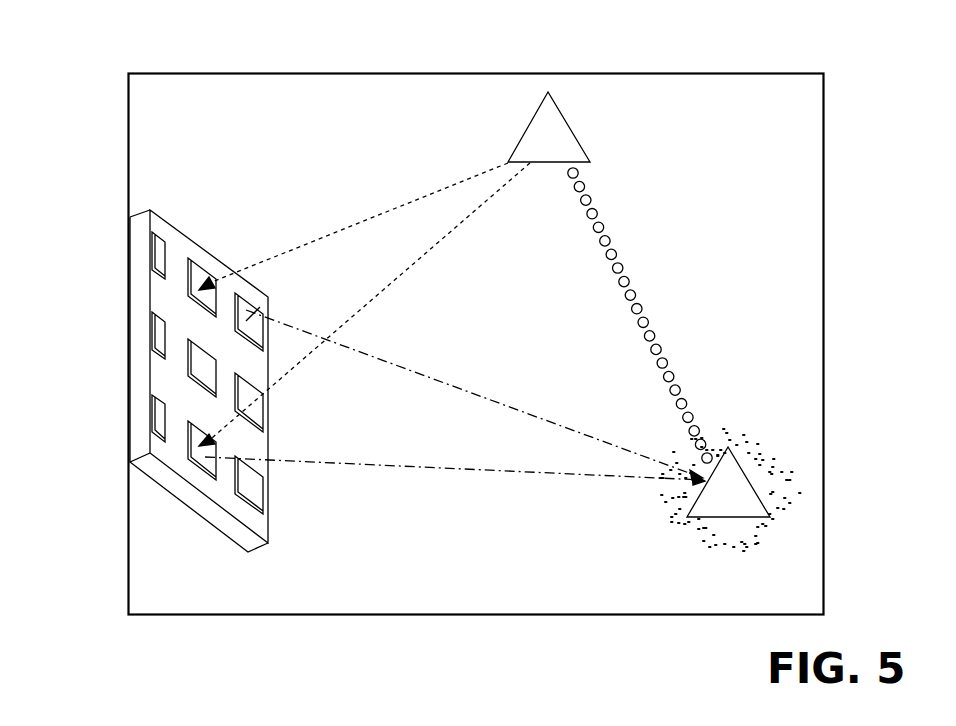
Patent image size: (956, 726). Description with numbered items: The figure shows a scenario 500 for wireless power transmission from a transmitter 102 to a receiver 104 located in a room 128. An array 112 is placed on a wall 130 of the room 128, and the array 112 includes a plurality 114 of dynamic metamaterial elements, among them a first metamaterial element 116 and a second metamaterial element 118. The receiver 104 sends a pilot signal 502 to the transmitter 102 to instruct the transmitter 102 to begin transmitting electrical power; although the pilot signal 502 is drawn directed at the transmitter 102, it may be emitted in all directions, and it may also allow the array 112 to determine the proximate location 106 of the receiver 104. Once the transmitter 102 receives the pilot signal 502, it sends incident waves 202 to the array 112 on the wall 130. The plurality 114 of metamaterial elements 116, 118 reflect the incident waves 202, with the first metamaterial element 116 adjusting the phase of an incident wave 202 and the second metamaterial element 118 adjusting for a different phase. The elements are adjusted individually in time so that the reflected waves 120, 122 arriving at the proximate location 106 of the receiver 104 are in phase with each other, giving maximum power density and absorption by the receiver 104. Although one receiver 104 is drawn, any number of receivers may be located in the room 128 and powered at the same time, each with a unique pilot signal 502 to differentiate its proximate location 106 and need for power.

The scenario 500 is at (897, 86).
The transmitter 102 is at (535, 135).
The receiver 104 is at (743, 492).
The proximate location 106 is at (773, 443).
The array 112 is at (138, 395).
The plurality of metamaterial elements 114 is at (257, 312).
The first metamaterial element 116 is at (196, 298).
The second metamaterial element 118 is at (192, 460).
The reflected wave 120 is at (487, 398).
The reflected wave 122 is at (618, 478).
The room 128 is at (797, 212).
The wall 130 is at (128, 597).
The incident waves 202 is at (405, 268).
The pilot signal 502 is at (604, 217).